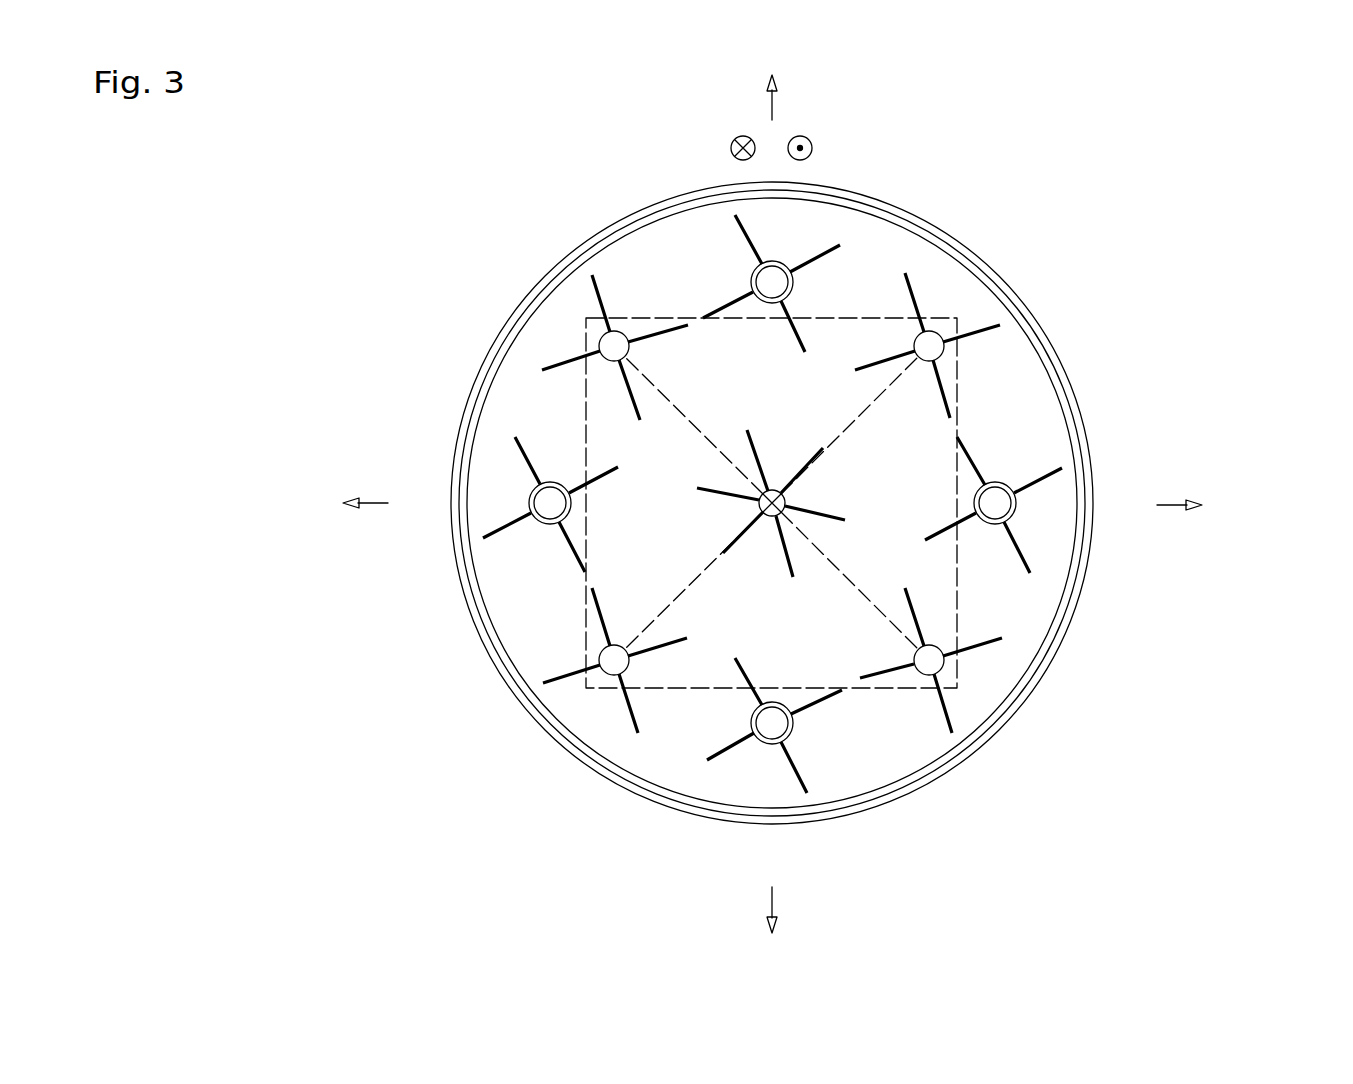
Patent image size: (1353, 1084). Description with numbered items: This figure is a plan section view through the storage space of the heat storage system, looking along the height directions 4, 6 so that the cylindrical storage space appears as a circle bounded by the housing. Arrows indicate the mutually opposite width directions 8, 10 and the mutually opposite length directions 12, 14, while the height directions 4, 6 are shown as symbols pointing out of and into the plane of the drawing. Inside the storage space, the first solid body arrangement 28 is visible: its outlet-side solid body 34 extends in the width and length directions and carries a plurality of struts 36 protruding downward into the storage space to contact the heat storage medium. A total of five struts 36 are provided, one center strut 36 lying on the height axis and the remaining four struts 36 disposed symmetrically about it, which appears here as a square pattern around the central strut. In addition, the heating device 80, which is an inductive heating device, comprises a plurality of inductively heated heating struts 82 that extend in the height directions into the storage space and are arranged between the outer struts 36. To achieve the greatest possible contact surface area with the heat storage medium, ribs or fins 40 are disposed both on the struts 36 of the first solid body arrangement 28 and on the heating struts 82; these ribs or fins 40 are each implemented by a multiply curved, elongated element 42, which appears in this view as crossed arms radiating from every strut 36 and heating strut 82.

The height direction 4 is at (810, 157).
The height direction 6 is at (733, 157).
The width direction 8 is at (383, 503).
The width direction 10 is at (1172, 505).
The length direction 12 is at (773, 107).
The length direction 14 is at (773, 898).
The first solid body arrangement 28 is at (855, 494).
The outlet-side solid body 34 is at (962, 597).
The strut 36 is at (614, 340).
The rib or fin 40 is at (785, 542).
The multiply curved, elongated element 42 is at (597, 292).
The heating device 80 is at (715, 530).
The heating strut 82 is at (550, 508).